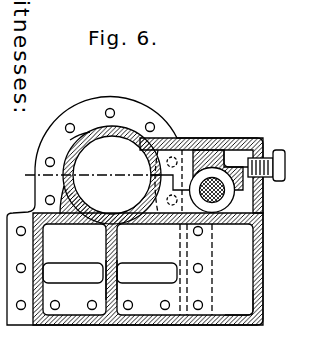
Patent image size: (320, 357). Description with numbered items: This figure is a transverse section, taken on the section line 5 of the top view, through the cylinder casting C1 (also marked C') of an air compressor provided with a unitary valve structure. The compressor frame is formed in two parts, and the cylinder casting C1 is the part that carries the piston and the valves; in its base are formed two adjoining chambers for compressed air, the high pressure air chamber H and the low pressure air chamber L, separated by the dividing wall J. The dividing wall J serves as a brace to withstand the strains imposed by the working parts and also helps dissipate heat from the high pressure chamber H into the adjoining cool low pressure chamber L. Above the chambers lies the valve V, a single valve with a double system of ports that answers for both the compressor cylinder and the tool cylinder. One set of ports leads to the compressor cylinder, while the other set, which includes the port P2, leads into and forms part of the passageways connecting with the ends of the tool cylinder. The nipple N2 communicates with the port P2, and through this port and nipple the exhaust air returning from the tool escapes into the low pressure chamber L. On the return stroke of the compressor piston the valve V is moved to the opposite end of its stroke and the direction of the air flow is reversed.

The cylinder casting C' is at (68, 116).
The section line 5- 5 is at (297, 167).
The valve V is at (202, 177).
The port P2 is at (237, 158).
The nipple N2 is at (270, 160).
The dividing wall J is at (111, 286).
The cylinder casting C1 is at (240, 308).
The low pressure air chamber L is at (73, 273).
The high pressure air chamber H is at (147, 273).